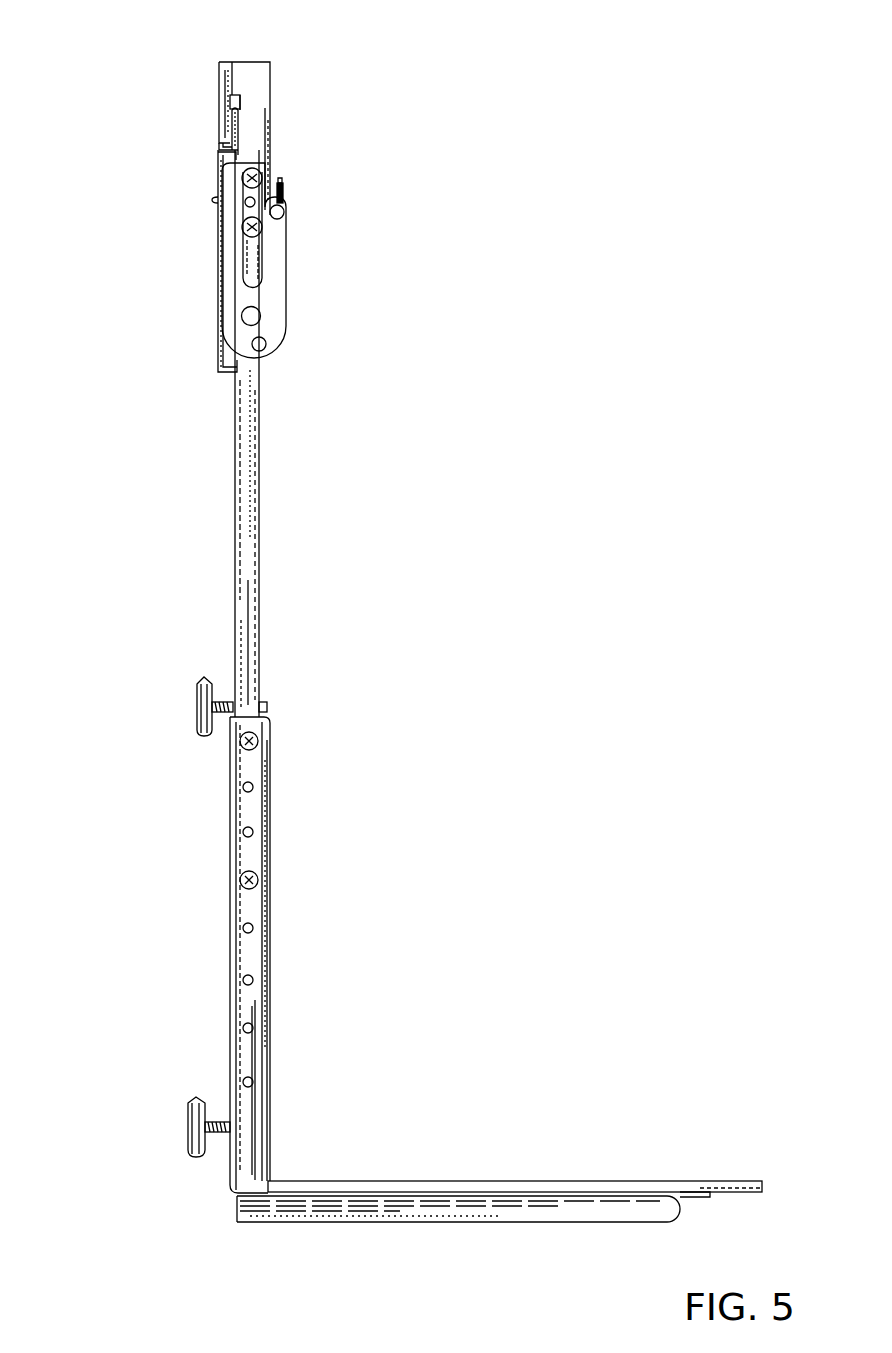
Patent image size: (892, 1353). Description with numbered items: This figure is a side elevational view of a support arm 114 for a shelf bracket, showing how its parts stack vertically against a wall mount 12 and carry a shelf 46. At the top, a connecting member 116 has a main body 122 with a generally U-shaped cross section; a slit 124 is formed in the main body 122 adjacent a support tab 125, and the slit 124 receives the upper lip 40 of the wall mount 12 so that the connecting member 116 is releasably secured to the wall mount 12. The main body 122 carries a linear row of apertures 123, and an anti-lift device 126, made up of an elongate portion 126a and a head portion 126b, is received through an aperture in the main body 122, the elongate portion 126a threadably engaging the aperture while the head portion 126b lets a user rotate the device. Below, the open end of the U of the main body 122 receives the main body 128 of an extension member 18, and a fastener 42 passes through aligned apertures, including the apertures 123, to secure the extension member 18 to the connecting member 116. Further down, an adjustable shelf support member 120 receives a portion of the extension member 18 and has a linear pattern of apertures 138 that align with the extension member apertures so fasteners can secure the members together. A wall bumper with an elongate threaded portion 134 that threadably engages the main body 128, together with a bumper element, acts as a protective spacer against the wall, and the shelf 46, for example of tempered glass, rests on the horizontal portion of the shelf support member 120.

The support arm 114 is at (125, 68).
The connecting member 116 is at (273, 85).
The main body 122 is at (222, 72).
The slit 124 is at (233, 95).
The upper lip 40 is at (233, 112).
The support tab 125 is at (222, 140).
The anti-lift device 126 is at (284, 193).
The elongate portion 126a is at (214, 201).
The head portion 126b is at (281, 183).
The apertures 123 is at (285, 213).
The fastener 42 is at (256, 232).
The wall mount 12 is at (218, 297).
The extension members 18 is at (263, 432).
The main body 128 is at (235, 490).
The elongate threaded portion 134 is at (270, 708).
The apertures 138 is at (245, 931).
The adjustable shelf support member 120 is at (230, 1066).
The shelf 46 is at (745, 1198).